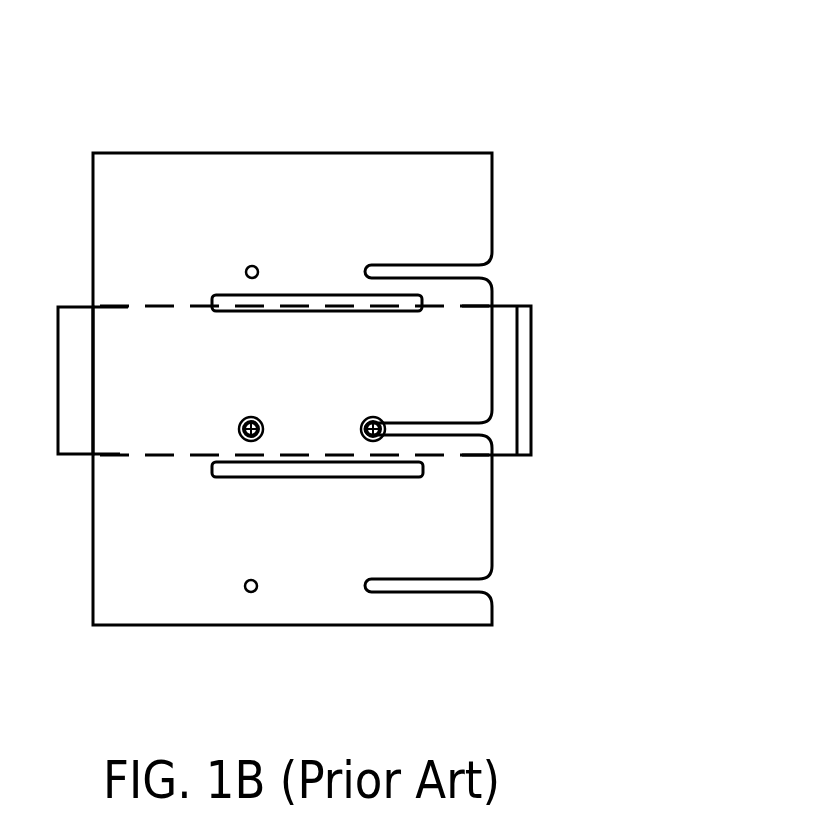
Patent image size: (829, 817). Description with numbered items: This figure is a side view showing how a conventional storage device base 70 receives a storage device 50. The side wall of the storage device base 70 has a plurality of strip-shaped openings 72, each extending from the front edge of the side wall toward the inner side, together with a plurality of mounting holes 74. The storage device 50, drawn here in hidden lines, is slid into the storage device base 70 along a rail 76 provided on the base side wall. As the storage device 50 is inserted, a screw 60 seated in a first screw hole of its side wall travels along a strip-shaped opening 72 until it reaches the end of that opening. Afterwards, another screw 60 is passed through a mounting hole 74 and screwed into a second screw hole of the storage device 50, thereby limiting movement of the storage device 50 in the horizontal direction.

The storage device base 70 is at (141, 110).
The storage device 50 is at (527, 297).
The screw 60 is at (385, 436).
The strip-shaped opening 72 is at (401, 588).
The mounting hole 74 is at (256, 592).
The rail 76 is at (423, 470).